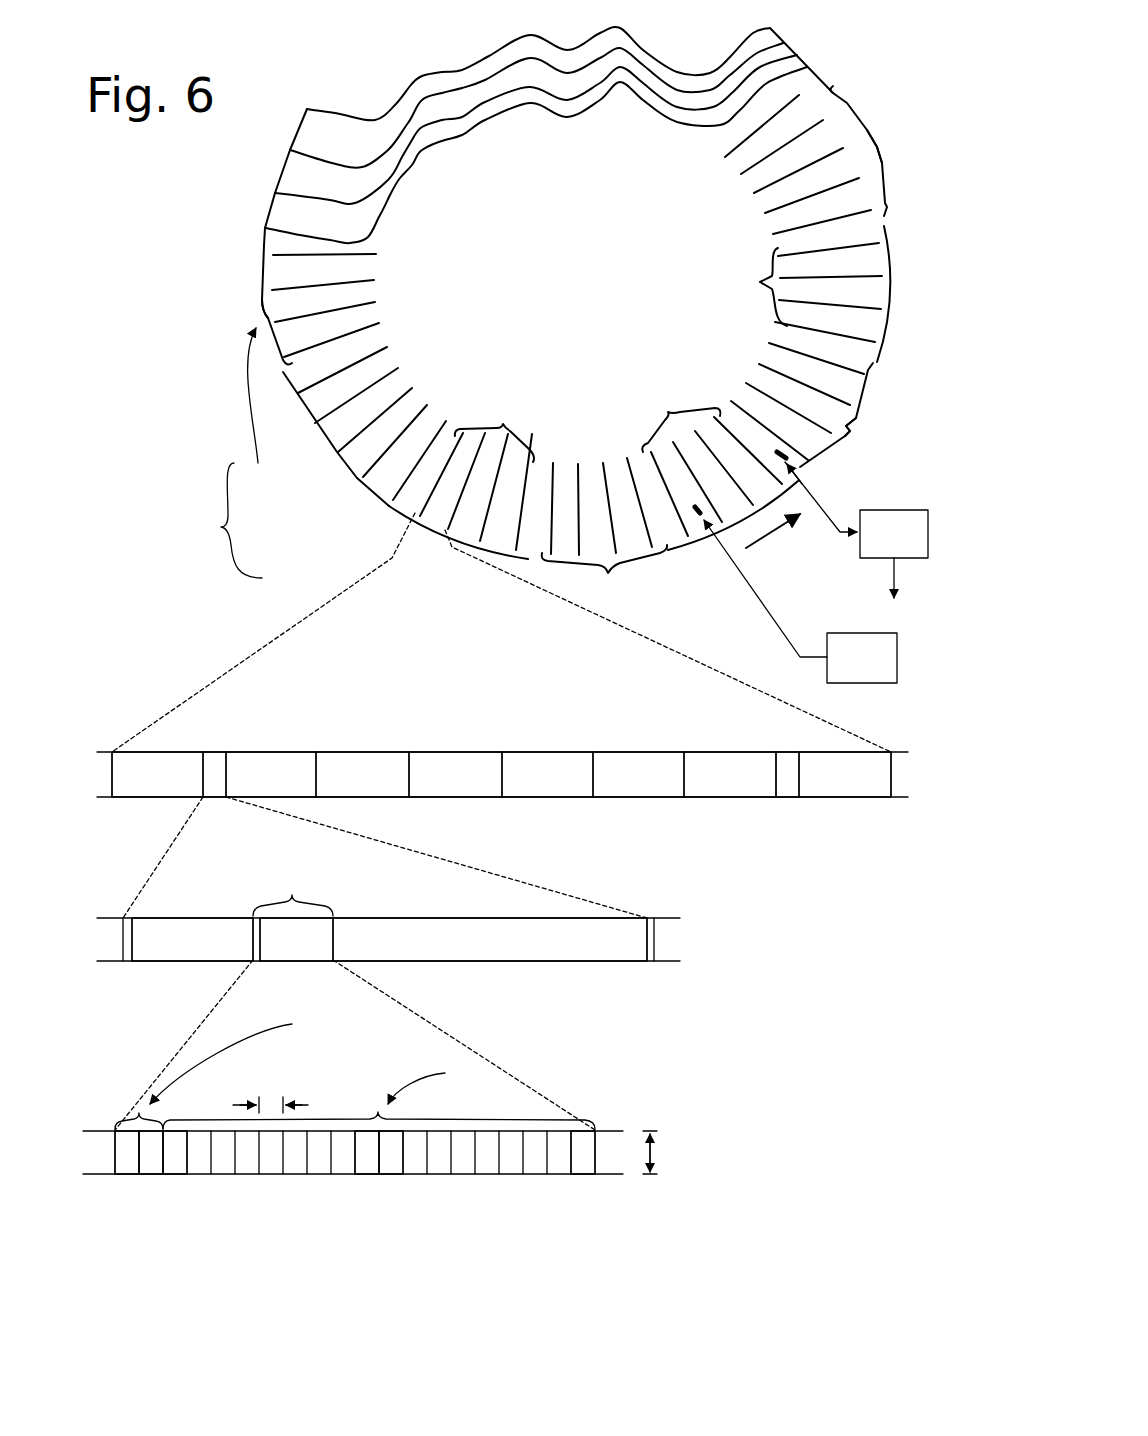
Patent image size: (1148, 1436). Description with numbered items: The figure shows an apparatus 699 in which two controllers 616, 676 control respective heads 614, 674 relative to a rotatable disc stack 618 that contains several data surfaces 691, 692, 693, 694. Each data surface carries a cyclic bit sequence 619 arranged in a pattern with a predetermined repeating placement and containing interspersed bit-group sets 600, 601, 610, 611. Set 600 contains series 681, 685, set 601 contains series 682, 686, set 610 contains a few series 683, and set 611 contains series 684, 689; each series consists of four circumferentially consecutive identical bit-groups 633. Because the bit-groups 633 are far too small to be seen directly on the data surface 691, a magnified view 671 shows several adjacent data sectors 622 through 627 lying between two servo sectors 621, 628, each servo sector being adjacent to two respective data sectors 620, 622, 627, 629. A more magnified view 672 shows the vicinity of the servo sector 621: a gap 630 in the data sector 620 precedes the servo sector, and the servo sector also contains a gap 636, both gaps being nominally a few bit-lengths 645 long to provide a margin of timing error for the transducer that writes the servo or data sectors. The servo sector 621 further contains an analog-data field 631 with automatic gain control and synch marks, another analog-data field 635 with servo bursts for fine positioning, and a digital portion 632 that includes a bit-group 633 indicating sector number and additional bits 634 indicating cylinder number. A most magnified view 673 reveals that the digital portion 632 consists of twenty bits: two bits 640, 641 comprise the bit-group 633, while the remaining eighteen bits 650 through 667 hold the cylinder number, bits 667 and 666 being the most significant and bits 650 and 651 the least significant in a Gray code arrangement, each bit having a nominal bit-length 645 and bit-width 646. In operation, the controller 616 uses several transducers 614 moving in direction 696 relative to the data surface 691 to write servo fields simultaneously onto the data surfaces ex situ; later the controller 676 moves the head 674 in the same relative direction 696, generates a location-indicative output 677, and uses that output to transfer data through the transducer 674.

The bit-group set 600 is at (755, 295).
The bit-group set 601 is at (885, 163).
The bit-group set 610 is at (733, 146).
The bit-group set 611 is at (334, 457).
The head 614 is at (693, 524).
The controller 616 is at (842, 671).
The rotatable disc stack 618 is at (369, 68).
The cyclic bit sequence 619 is at (223, 453).
The data sector 620 is at (132, 786).
The servo sector 621 is at (217, 756).
The data sector 622 is at (300, 756).
The data sector 627 is at (700, 790).
The servo sector 628 is at (783, 790).
The data sector 629 is at (870, 790).
The gap 630 is at (126, 962).
The analog-data field 631 is at (165, 962).
The digital portion 632 is at (293, 894).
The bit-group 633 is at (257, 962).
The additional bits 634 is at (333, 962).
The analog-data field 635 is at (572, 962).
The gap 636 is at (654, 962).
The bit 640 is at (145, 1175).
The bit 641 is at (120, 1175).
The bit-length 645 is at (270, 1094).
The bit-width 646 is at (673, 1152).
The bit 650 is at (365, 1175).
The bit 651 is at (391, 1175).
The bit 666 is at (168, 1175).
The bit 667 is at (582, 1175).
The magnified view 671 is at (513, 802).
The more magnified view 672 is at (442, 979).
The most magnified view 673 is at (440, 1152).
The head 674 is at (766, 449).
The controller 676 is at (875, 546).
The location-indicative output 677 is at (917, 587).
The series 681 is at (503, 432).
The series 682 is at (605, 573).
The series 683 is at (681, 418).
The series 684 is at (873, 432).
The series 685 is at (751, 287).
The series 686 is at (896, 146).
The series 689 is at (239, 311).
The data surface 691 is at (267, 232).
The data surface 692 is at (326, 229).
The data surface 693 is at (316, 191).
The data surface 694 is at (326, 146).
The direction 696 is at (778, 536).
The apparatus 699 is at (371, 41).